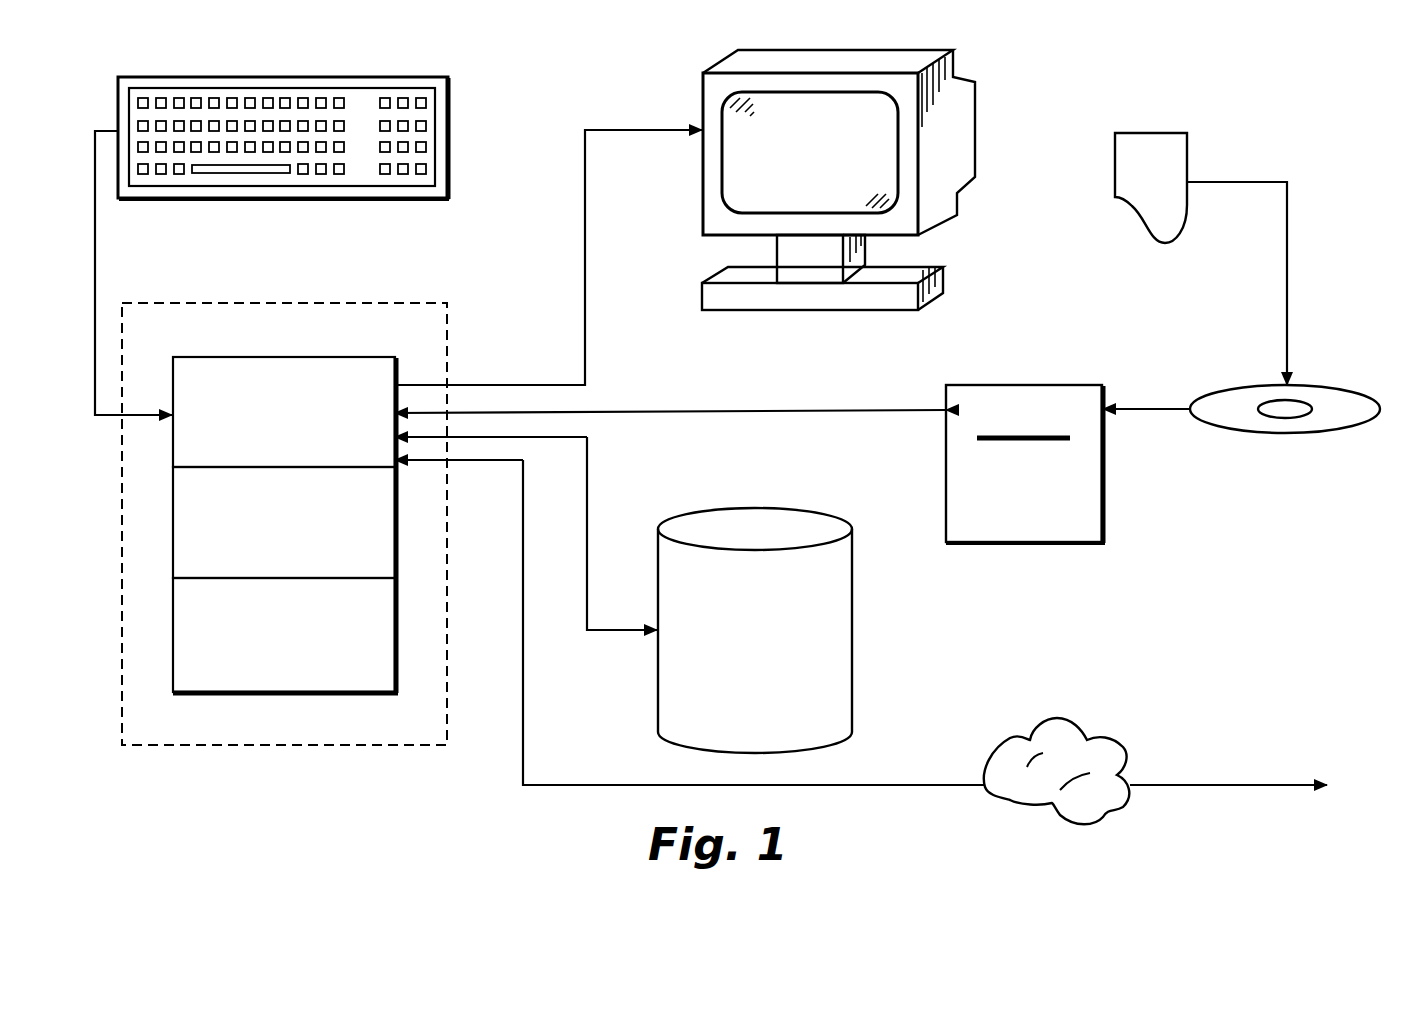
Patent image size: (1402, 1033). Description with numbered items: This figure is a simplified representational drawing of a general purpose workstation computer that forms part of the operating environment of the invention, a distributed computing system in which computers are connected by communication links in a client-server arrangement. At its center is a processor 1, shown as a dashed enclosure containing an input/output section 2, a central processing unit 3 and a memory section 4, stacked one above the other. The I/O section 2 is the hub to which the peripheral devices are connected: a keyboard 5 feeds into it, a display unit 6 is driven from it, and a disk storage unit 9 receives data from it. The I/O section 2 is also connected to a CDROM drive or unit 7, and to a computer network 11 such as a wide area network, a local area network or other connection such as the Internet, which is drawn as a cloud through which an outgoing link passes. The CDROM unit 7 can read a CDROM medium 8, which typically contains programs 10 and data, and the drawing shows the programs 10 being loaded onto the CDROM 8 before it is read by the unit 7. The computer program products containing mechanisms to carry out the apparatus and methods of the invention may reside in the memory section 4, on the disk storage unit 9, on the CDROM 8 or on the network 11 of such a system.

The processor 1 is at (398, 302).
The input/output section 2 is at (260, 363).
The central processing unit 3 is at (396, 540).
The memory section 4 is at (396, 675).
The keyboard 5 is at (425, 78).
The display unit 6 is at (903, 58).
The CDROM drive or unit 7 is at (975, 383).
The CDROM medium 8 is at (1260, 390).
The disk storage unit 9 is at (848, 605).
The programs 10 is at (1130, 142).
The computer network 11 is at (1062, 730).